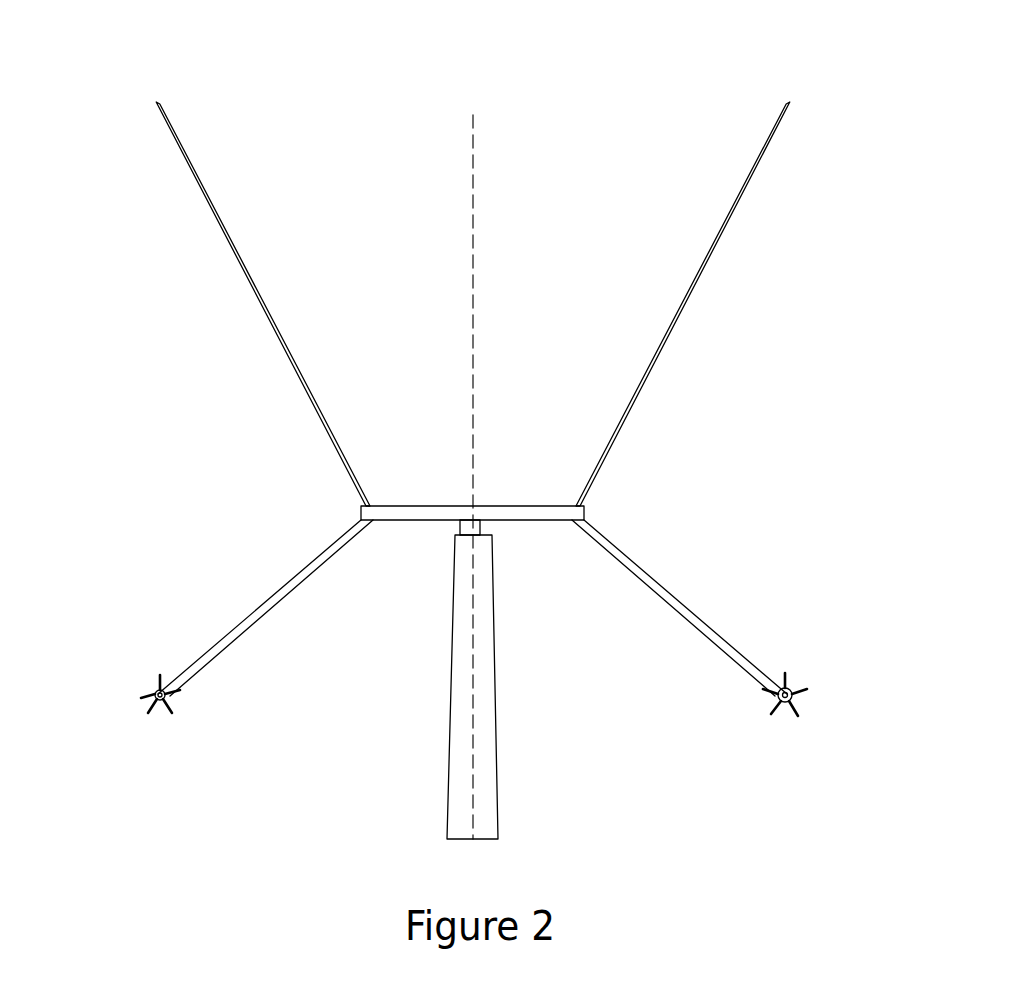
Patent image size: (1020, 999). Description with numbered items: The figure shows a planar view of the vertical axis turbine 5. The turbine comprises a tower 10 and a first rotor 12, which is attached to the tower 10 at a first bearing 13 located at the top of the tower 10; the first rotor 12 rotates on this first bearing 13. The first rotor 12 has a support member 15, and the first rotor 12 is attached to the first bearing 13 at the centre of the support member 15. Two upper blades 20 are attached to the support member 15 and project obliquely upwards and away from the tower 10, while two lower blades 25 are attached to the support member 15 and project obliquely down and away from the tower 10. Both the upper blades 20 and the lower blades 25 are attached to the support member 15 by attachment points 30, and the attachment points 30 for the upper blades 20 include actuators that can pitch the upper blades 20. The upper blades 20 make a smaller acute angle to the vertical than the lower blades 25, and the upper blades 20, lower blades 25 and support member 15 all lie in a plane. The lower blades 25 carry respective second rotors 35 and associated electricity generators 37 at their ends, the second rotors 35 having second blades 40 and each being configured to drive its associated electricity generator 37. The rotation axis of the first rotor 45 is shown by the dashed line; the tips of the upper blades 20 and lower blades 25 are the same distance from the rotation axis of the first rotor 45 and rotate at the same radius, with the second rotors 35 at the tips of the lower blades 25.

The vertical axis turbine 5 is at (134, 52).
The tower 10 is at (487, 708).
The first rotor 12 is at (768, 289).
The first bearing 13 is at (482, 523).
The support member 15 is at (429, 513).
The upper blades 20 is at (249, 270).
The lower blades 25 is at (233, 630).
The attachment points 30 is at (360, 522).
The second rotors 35 is at (152, 693).
The electricity generators 37 is at (170, 697).
The second blades 40 is at (140, 713).
The rotation axis of the first rotor 45 is at (473, 237).